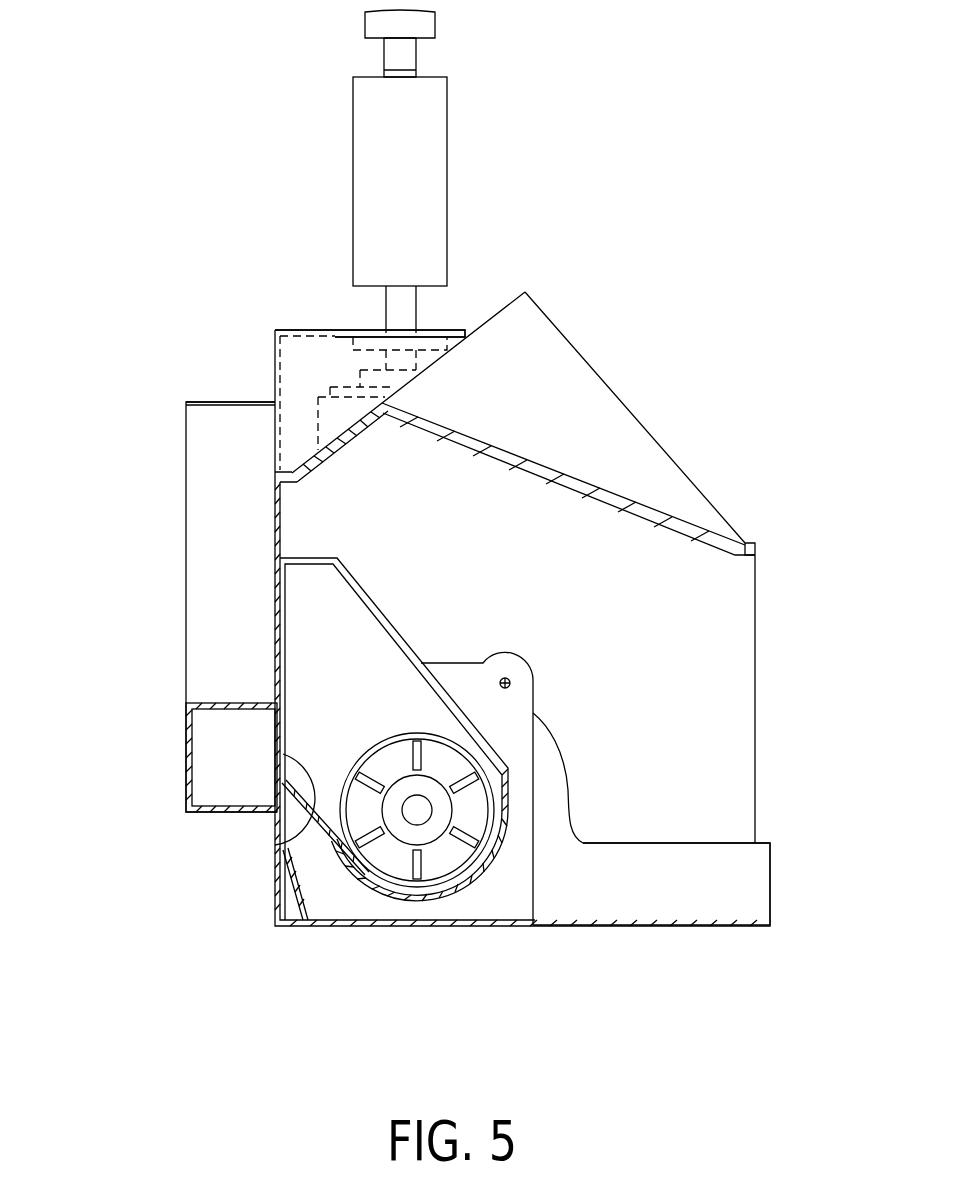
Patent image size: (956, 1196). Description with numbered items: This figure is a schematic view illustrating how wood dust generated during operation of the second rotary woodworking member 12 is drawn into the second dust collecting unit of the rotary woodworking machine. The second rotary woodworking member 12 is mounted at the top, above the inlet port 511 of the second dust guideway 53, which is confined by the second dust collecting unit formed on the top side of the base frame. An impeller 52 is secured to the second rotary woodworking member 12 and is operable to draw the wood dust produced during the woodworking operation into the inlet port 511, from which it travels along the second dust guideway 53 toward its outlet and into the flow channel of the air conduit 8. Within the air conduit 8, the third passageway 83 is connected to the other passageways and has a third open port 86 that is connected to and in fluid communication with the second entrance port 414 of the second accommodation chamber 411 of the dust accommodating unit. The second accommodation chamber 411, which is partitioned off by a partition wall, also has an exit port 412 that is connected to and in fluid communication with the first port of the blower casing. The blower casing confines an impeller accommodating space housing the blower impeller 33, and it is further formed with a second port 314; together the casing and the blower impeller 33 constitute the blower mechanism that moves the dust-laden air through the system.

The second rotary woodworking member 12 is at (433, 108).
The inlet port 511 is at (345, 331).
The impeller 52 is at (397, 345).
The second dust guideway 53 is at (307, 372).
The air conduit 8 is at (186, 590).
The third passageway 83 is at (207, 752).
The third open port 86 is at (275, 760).
The second accommodation chamber 411 is at (315, 662).
The second port 314 is at (770, 893).
The second entrance port 414 is at (290, 832).
The exit port 412 is at (378, 883).
The blower impeller 33 is at (463, 880).